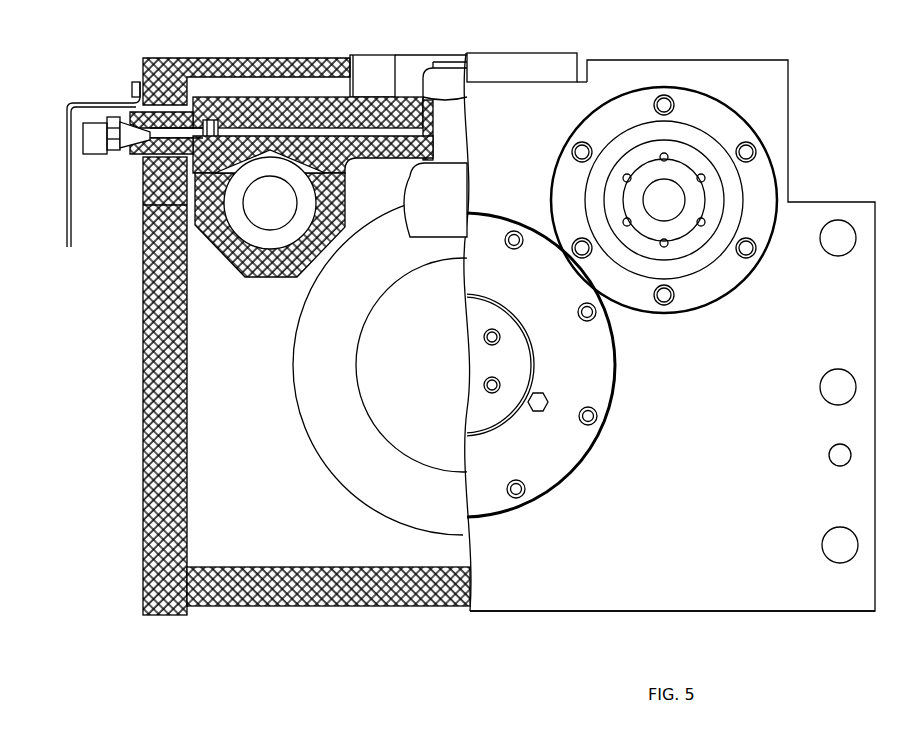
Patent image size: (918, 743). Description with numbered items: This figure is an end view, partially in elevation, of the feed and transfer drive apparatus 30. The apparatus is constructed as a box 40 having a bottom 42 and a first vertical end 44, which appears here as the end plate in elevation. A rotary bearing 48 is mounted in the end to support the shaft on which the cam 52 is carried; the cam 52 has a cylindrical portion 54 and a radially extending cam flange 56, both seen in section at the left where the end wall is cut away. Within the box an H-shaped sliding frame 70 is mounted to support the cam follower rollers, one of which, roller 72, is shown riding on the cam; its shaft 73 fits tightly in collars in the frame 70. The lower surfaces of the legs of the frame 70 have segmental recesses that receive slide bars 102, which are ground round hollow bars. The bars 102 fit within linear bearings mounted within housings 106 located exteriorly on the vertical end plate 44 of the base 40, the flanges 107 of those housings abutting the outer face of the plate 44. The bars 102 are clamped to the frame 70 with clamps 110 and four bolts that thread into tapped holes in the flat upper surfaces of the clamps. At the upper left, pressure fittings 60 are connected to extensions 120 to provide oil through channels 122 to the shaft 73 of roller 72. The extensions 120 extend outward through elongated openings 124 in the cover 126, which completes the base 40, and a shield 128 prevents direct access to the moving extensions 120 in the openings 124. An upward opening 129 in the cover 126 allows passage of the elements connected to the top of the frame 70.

The feed and transfer drive apparatus 30 is at (566, 620).
The box 40 is at (655, 612).
The bottom 42 is at (335, 593).
The first vertical end 44 is at (718, 577).
The rotary bearings 48 is at (600, 372).
The cam 52 is at (312, 458).
The cylindrical portion 54 is at (427, 425).
The cam flange 56 is at (387, 481).
The pressure fittings 60 is at (115, 146).
The H-shaped sliding frame 70 is at (242, 110).
The cam follower roller 72 is at (448, 198).
The shaft 73 is at (458, 124).
The slide bars 102 is at (257, 233).
The housings 106 is at (728, 89).
The flanges 107 is at (757, 178).
The clamps 110 is at (267, 262).
The extensions 120 is at (147, 148).
The channels 122 is at (378, 132).
The elongated openings 124 is at (173, 156).
The cover 126 is at (143, 72).
The shield 128 is at (67, 228).
The upward opening 129 is at (353, 57).